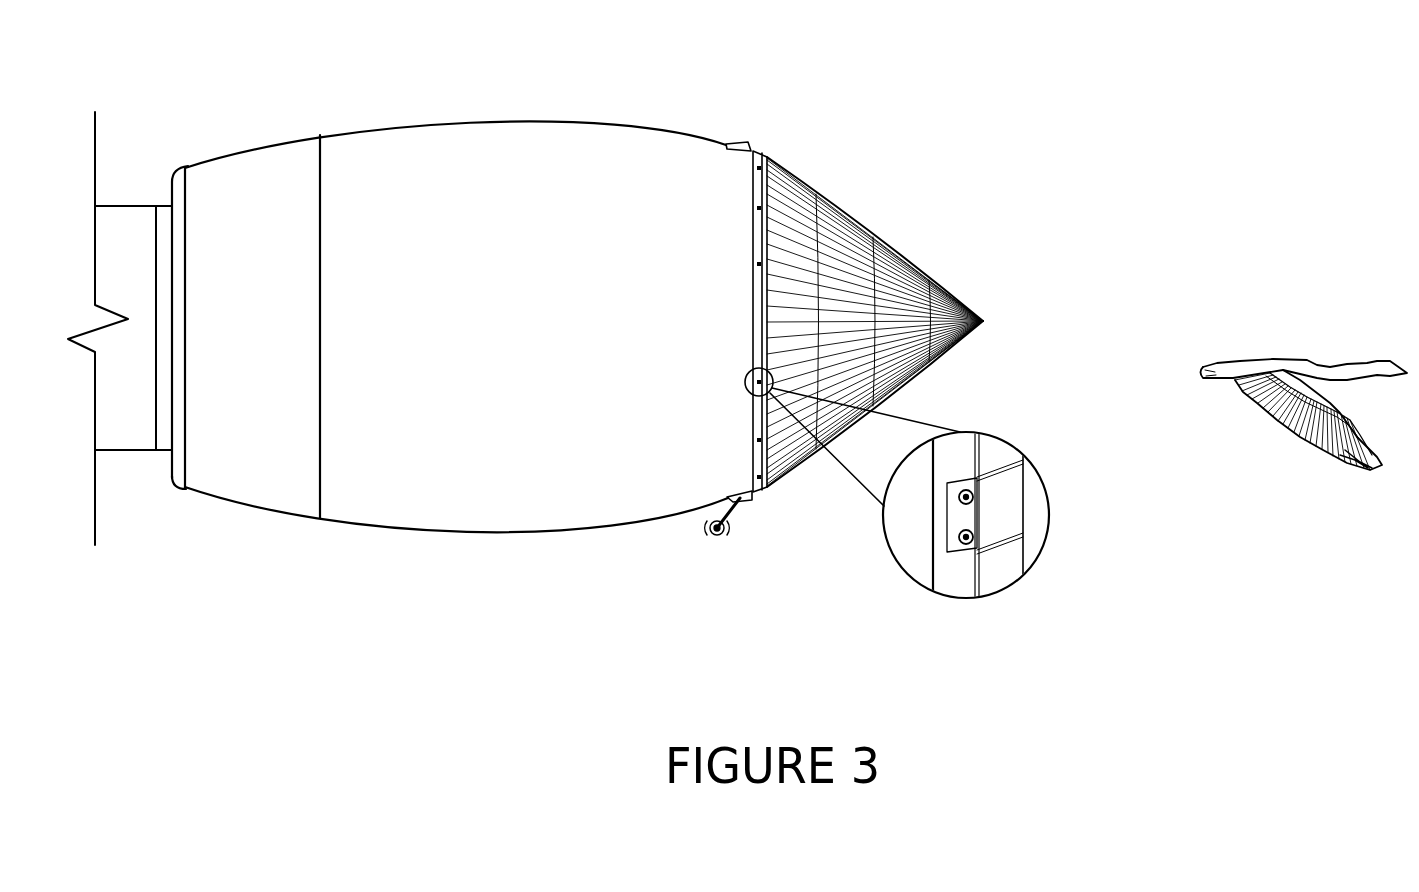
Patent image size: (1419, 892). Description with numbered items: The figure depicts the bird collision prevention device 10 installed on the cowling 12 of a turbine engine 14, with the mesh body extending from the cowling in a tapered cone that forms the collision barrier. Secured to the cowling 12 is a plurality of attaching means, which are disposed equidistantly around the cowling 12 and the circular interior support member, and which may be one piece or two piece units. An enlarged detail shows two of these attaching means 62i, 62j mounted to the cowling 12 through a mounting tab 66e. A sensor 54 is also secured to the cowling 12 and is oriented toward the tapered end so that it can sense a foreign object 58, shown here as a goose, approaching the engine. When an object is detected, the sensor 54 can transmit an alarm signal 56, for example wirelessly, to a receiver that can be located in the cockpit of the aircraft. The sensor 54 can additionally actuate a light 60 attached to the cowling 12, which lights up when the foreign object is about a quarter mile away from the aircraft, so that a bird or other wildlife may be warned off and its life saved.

The bird collision prevention device 10 is at (933, 138).
The cowling 12 is at (497, 142).
The turbine engine 14 is at (405, 528).
The sensor 54 is at (745, 505).
The alarm signal 56 is at (710, 545).
The foreign object 58 is at (1297, 363).
The light 60 is at (743, 143).
The attaching means 62i is at (971, 487).
The attaching means 62j is at (964, 542).
The mounting tab 66e is at (966, 515).